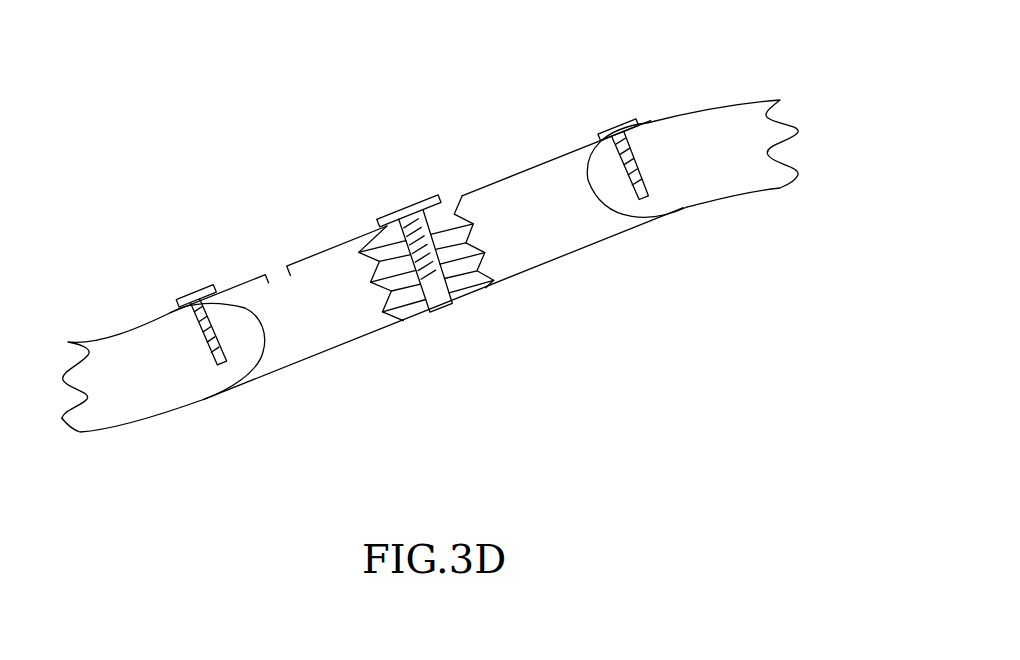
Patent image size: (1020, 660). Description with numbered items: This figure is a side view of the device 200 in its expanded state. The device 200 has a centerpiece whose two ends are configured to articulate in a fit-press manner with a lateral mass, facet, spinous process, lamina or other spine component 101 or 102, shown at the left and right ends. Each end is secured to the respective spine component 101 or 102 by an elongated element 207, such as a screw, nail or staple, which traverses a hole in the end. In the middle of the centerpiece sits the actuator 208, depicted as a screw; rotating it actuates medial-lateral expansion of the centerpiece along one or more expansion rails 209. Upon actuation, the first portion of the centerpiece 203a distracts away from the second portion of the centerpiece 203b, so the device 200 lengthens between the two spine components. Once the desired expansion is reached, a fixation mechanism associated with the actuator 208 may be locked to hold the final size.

The device 200 is at (222, 105).
The spine component 101 is at (148, 395).
The spine component 102 is at (715, 168).
The first portion of the centerpiece 203a is at (330, 323).
The second portion of the centerpiece 203b is at (550, 244).
The elongated element 207 is at (197, 298).
The actuator 208 is at (406, 212).
The expansion rail 209 is at (447, 228).